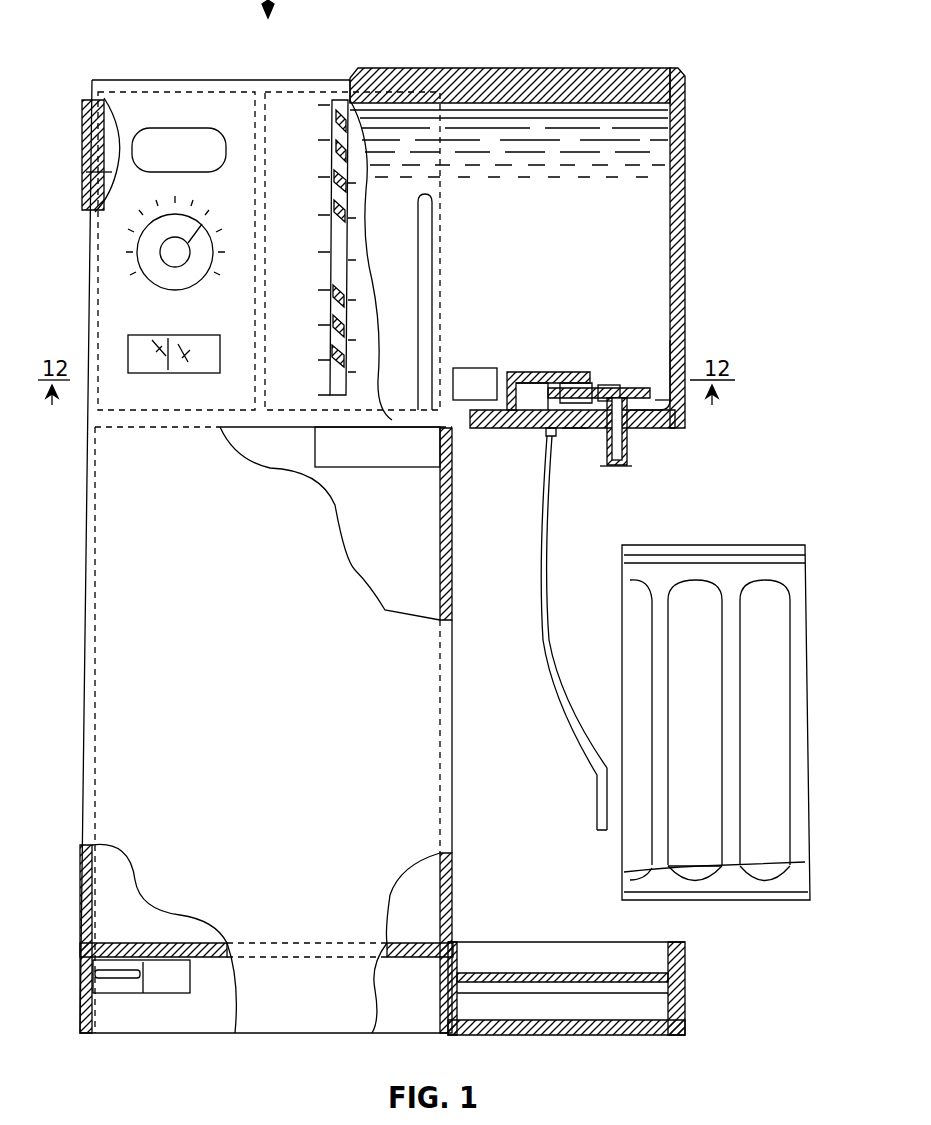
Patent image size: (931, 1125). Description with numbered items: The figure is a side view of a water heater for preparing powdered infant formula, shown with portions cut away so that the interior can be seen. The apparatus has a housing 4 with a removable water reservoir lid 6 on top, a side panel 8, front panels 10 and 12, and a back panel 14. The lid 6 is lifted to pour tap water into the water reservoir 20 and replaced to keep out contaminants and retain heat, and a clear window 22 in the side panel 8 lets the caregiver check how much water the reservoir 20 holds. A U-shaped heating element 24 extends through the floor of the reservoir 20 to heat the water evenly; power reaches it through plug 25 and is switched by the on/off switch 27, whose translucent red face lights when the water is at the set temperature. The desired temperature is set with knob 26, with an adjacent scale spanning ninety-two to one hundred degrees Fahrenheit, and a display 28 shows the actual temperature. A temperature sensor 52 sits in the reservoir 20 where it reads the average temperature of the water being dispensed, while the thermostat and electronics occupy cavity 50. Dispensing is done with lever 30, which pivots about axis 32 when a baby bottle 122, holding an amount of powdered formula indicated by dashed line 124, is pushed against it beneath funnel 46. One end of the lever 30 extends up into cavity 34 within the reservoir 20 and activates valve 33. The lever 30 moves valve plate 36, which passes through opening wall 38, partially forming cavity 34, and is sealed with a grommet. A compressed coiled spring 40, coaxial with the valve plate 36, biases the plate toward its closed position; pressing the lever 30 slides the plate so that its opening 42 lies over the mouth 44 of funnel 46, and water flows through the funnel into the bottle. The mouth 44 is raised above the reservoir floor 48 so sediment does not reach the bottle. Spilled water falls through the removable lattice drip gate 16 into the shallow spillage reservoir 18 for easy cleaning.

The housing 4 is at (96, 78).
The water reservoir lid 6 is at (494, 68).
The side panel 8 is at (219, 108).
The front panel 10 is at (455, 700).
The front panel 12 is at (685, 243).
The back panel 14 is at (82, 296).
The drip gate 16 is at (572, 960).
The spillage reservoir 18 is at (590, 1035).
The water reservoir 20 is at (572, 118).
The clear window 22 is at (340, 100).
The heating element 24 is at (432, 268).
The plug 25 is at (168, 993).
The knob 26 is at (140, 248).
The on/off switch 27 is at (162, 376).
The display 28 is at (148, 128).
The lever 30 is at (553, 668).
The axis 32 is at (546, 440).
The valve 33 is at (619, 476).
The cavity 34 is at (536, 392).
The valve plate 36 is at (680, 342).
The opening wall 38 is at (572, 430).
The compressed coiled spring 40 is at (562, 385).
The opening 42 is at (612, 385).
The mouth 44 is at (645, 412).
The funnel 46 is at (628, 455).
The floor 48 is at (662, 405).
The cavity 50 is at (104, 170).
The temperature sensor 52 is at (458, 368).
The baby bottle 122 is at (622, 660).
The dashed line 124 is at (705, 882).